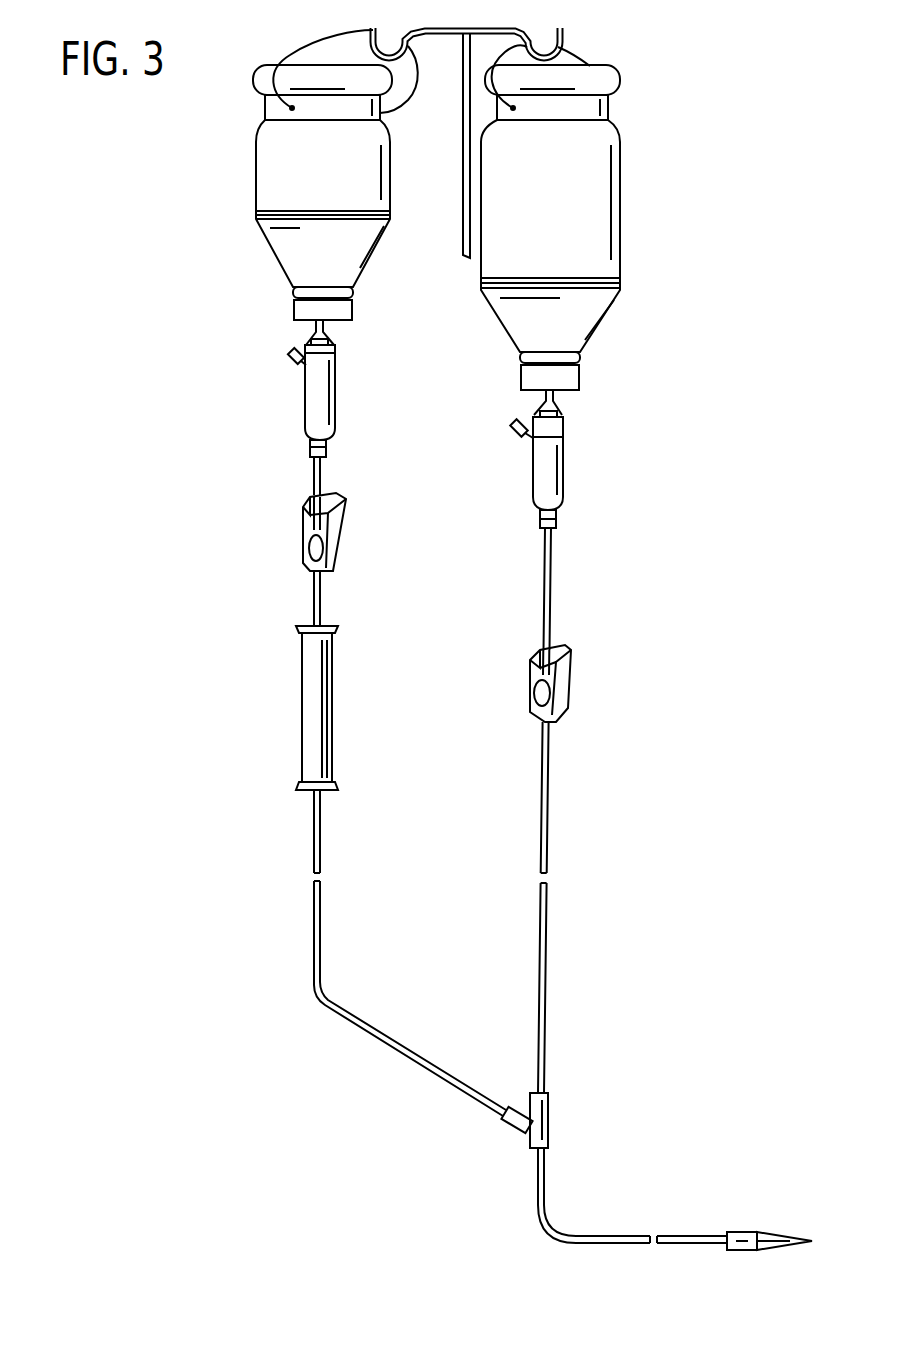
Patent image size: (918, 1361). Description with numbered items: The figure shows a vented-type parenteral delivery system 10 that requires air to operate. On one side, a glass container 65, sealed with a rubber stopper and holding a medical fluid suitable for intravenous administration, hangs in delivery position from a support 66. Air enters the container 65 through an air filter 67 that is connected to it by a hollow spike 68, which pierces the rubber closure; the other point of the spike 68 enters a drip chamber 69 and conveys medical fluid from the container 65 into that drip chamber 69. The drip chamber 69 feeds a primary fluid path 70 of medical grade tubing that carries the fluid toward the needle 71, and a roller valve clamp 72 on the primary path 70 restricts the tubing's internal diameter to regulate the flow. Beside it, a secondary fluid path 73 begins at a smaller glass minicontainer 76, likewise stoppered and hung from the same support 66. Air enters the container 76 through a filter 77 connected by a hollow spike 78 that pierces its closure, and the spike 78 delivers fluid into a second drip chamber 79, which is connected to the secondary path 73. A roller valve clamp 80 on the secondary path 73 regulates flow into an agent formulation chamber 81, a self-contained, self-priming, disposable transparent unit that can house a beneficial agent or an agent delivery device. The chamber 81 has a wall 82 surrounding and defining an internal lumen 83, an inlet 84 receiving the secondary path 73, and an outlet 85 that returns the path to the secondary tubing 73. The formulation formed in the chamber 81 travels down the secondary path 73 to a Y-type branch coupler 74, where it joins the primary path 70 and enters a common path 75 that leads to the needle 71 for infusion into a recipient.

The parenteral delivery system 10 is at (656, 310).
The glass container 65 is at (622, 200).
The support 66 is at (466, 31).
The air filter 67 is at (515, 436).
The spike 68 is at (556, 398).
The drip chamber 69 is at (565, 467).
The primary fluid path 70 is at (551, 588).
The needle 71 is at (777, 1234).
The roller valve clamp 72 is at (571, 680).
The secondary fluid path 73 is at (314, 480).
The branch coupler 74 is at (520, 1132).
The common path 75 is at (583, 1236).
The container 76 is at (256, 162).
The filter 77 is at (292, 362).
The spike 78 is at (313, 327).
The drip chamber 79 is at (308, 418).
The roller valve clamp 80 is at (305, 550).
The agent formulation chamber 81 is at (302, 660).
The wall 82 is at (302, 700).
The internal lumen 83 is at (310, 742).
The inlet 84 is at (308, 630).
The outlet 85 is at (310, 790).